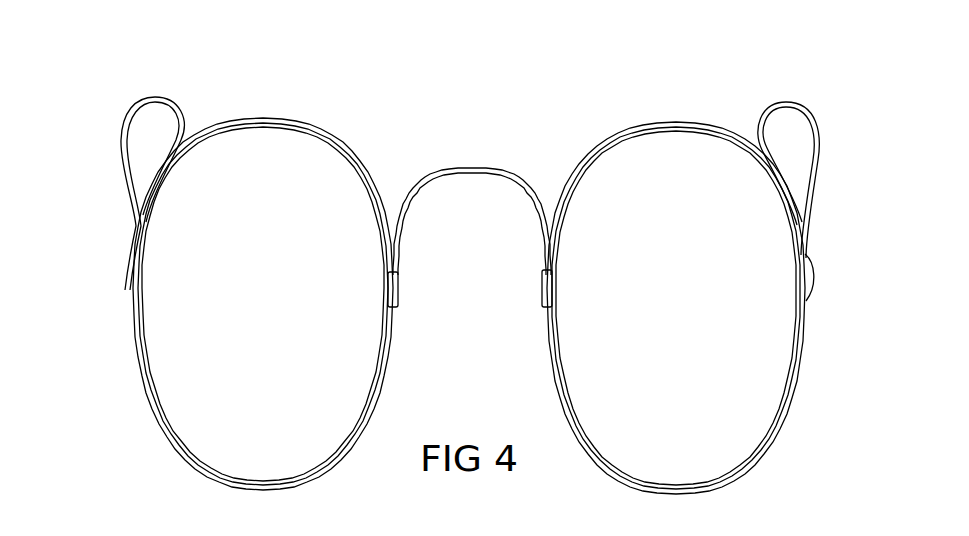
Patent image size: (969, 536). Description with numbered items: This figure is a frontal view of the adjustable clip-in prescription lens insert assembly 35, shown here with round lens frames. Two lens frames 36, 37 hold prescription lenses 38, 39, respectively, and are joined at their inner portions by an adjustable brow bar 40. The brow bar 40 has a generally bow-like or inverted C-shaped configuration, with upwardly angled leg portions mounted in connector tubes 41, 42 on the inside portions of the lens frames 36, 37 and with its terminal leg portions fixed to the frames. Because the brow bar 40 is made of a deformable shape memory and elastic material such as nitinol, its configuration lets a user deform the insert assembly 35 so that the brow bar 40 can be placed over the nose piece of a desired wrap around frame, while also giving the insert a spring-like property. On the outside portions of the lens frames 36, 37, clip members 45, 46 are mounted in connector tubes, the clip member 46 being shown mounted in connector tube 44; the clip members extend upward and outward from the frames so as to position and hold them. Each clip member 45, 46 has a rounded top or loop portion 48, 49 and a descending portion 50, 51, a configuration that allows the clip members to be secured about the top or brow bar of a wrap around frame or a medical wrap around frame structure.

The adjustable clip-in prescription lens insert assembly 35 is at (493, 209).
The lens frame 36 is at (257, 118).
The lens frame 37 is at (674, 121).
The prescription lens 38 is at (185, 389).
The prescription lens 39 is at (750, 386).
The adjustable brow bar 40 is at (470, 168).
The connector tube 41 is at (396, 292).
The connector tube 42 is at (546, 292).
The connector tube 44 is at (807, 252).
The clip member 45 is at (113, 170).
The clip member 46 is at (823, 174).
The loop portion 48 is at (160, 98).
The loop portion 49 is at (784, 103).
The descending portion 50 is at (122, 170).
The descending portion 51 is at (812, 183).